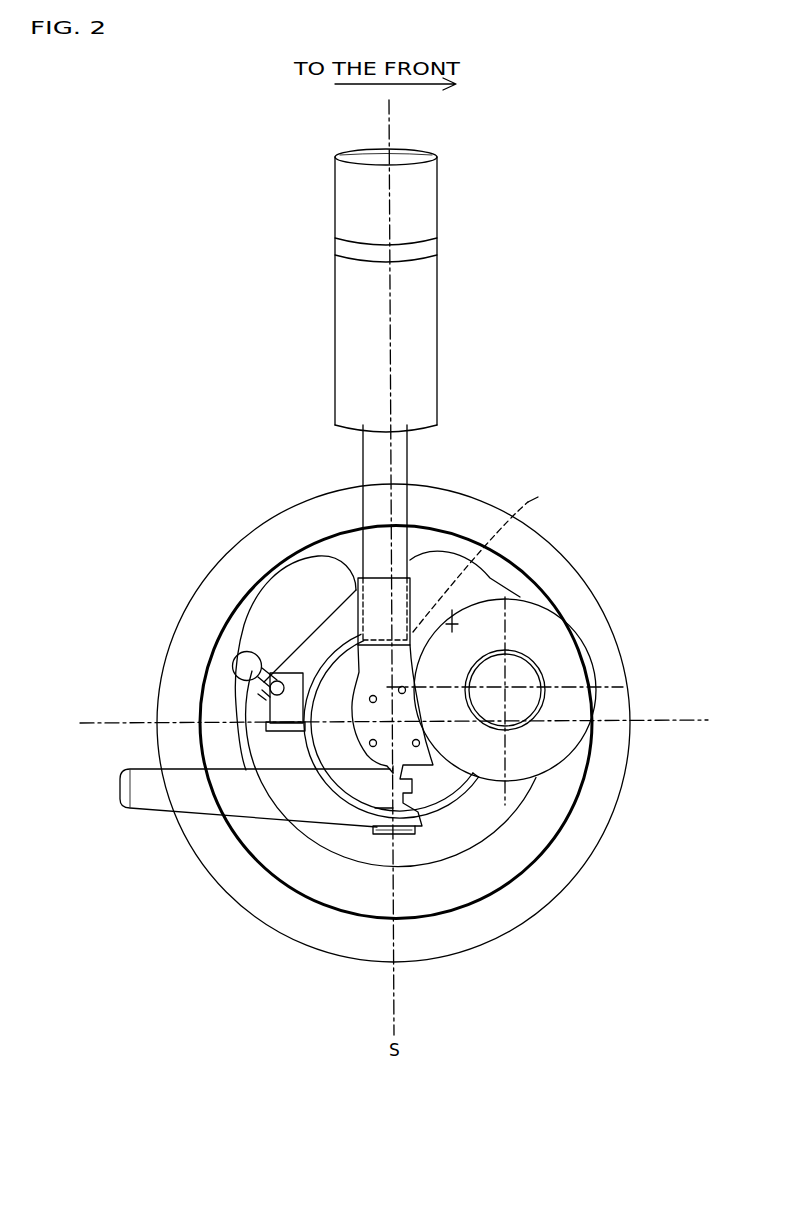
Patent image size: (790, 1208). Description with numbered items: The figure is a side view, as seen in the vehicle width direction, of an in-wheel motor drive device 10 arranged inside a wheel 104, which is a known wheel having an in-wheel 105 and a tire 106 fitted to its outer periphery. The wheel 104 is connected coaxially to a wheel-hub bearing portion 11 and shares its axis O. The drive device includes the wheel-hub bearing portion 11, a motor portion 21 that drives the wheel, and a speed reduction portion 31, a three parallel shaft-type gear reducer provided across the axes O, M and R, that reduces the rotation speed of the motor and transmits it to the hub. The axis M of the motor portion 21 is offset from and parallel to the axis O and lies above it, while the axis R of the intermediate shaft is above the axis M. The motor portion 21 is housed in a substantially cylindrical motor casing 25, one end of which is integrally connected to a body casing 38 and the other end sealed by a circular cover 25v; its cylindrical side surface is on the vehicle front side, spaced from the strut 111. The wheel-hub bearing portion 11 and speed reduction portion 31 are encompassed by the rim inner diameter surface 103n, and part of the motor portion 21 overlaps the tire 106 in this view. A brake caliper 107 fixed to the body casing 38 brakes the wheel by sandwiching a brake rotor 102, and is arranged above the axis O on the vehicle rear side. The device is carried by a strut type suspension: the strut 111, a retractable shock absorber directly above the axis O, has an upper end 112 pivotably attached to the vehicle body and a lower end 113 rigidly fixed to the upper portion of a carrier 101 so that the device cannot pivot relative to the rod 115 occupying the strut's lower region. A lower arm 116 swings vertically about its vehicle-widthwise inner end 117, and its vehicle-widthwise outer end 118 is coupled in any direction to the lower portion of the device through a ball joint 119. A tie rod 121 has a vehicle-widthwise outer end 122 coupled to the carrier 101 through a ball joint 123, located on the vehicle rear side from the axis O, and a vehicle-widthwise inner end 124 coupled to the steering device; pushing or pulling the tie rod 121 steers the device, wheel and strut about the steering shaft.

The in-wheel motor drive device 10 is at (536, 597).
The wheel-hub bearing portion 11 is at (357, 760).
The motor portion 21 is at (560, 690).
The motor casing 25 is at (597, 668).
The cover 25v is at (568, 647).
The speed reduction portion 31 is at (439, 548).
The body casing 38 is at (456, 562).
The carrier 101 is at (439, 763).
The brake rotor 102 is at (305, 832).
The rim inner diameter surface 103n is at (566, 790).
The wheel 104 is at (616, 836).
The in-wheel 105 is at (547, 872).
The tire 106 is at (577, 858).
The brake caliper 107 is at (287, 598).
The strut 111 is at (455, 211).
The upper end 112 is at (392, 158).
The lower end 113 is at (492, 557).
The rod 115 is at (398, 446).
The lower arm 116 is at (206, 826).
The vehicle-widthwise inner end 117 is at (147, 797).
The vehicle-widthwise outer end 118 is at (376, 925).
The ball joint 119 is at (392, 820).
The tie rod 121 is at (262, 692).
The vehicle-widthwise outer end 122 is at (185, 702).
The ball joint 123 is at (278, 712).
The vehicle-widthwise inner end 124 is at (240, 663).
The axis of the intermediate shaft R is at (520, 578).
The axis of the motor portion M is at (568, 705).
The axis of the wheel-hub bearing portion O is at (393, 723).